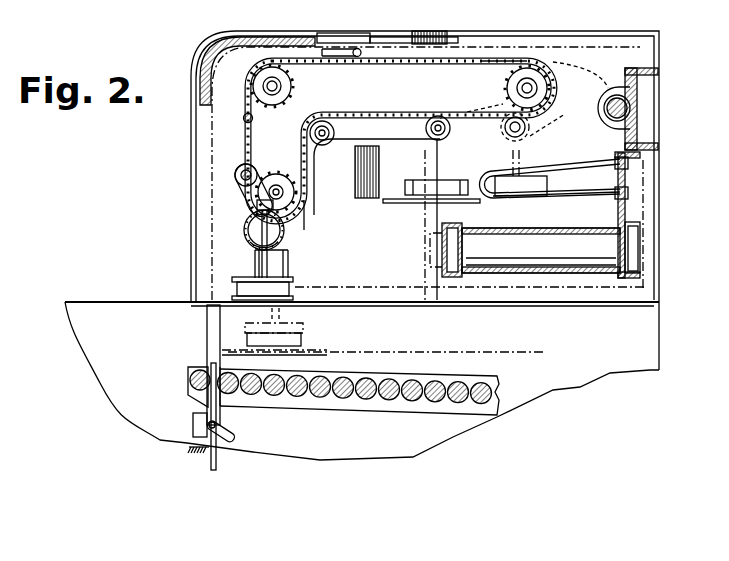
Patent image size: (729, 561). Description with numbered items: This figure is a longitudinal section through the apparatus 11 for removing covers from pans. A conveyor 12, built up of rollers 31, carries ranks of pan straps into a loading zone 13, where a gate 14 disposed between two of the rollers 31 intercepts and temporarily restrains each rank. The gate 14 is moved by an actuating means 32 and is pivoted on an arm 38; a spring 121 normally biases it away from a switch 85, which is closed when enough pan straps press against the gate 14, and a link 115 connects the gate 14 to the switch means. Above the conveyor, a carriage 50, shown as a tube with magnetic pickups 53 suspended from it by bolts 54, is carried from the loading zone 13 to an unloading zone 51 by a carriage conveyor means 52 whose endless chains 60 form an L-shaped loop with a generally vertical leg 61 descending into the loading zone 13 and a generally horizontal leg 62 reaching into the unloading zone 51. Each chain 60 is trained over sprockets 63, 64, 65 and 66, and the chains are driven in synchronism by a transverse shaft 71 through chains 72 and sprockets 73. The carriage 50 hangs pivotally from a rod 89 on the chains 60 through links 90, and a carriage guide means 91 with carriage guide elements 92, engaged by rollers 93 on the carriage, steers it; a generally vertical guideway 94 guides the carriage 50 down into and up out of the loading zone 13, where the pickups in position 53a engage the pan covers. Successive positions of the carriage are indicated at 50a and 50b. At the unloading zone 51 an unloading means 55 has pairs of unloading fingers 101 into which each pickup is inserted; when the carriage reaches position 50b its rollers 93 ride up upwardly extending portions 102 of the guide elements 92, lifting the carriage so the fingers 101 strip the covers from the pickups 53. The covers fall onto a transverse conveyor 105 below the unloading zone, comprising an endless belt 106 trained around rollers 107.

The apparatus 11 is at (158, 147).
The conveyor 12 is at (444, 372).
The loading zone 13 is at (226, 351).
The gate 14 is at (217, 372).
The rollers 31 is at (188, 379).
The actuating means 32 is at (221, 441).
The arm 38 is at (233, 433).
The carriage 50 is at (289, 248).
The carriage position 50a is at (424, 143).
The carriage position 50b is at (507, 150).
The unloading zone 51 is at (563, 213).
The carriage conveyor means 52 is at (470, 62).
The magnetic pickups 53 is at (294, 282).
The pickup position 53a is at (308, 333).
The bolts 54 is at (271, 268).
The unloading means 55 is at (600, 183).
The chains 60 is at (411, 63).
The generally vertical leg 61 is at (236, 146).
The generally horizontal leg 62 is at (503, 63).
The sprocket 63 is at (297, 194).
The sprocket 64 is at (296, 85).
The sprocket 65 is at (538, 83).
The sprocket 66 is at (333, 128).
The transverse shaft 71 is at (630, 108).
The chains 72 is at (612, 78).
The sprockets 73 is at (646, 86).
The switch 85 is at (197, 434).
The rod 89 is at (249, 170).
The links 90 is at (240, 208).
The carriage guide means 91 is at (311, 219).
The carriage guide elements 92 is at (312, 216).
The rollers 93 is at (253, 248).
The generally vertical guideway 94 is at (233, 280).
The unloading fingers 101 is at (552, 197).
The upwardly extending portions 102 is at (529, 128).
The transverse conveyor 105 is at (612, 225).
The endless belt 106 is at (570, 270).
The rollers 107 is at (603, 268).
The link 115 is at (207, 326).
The spring 121 is at (200, 458).